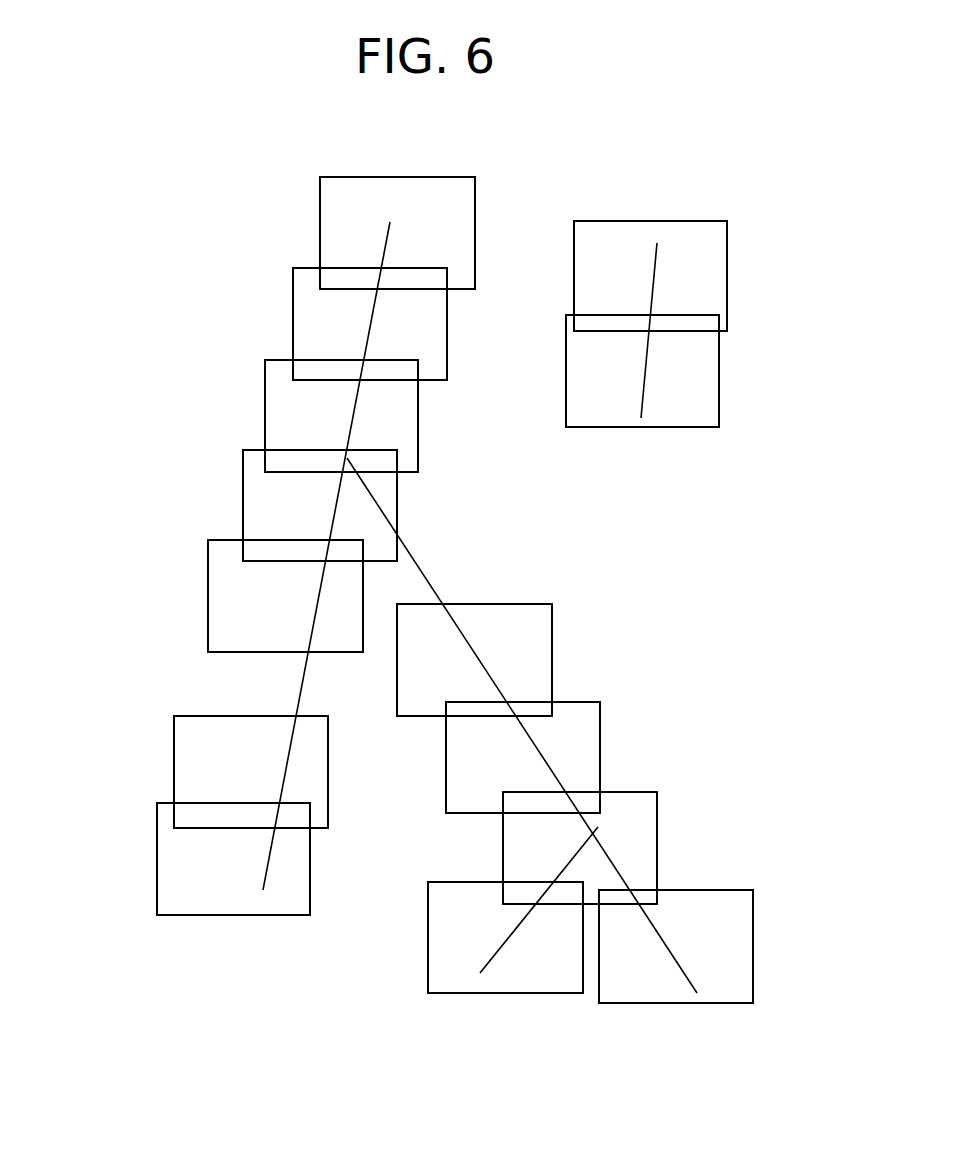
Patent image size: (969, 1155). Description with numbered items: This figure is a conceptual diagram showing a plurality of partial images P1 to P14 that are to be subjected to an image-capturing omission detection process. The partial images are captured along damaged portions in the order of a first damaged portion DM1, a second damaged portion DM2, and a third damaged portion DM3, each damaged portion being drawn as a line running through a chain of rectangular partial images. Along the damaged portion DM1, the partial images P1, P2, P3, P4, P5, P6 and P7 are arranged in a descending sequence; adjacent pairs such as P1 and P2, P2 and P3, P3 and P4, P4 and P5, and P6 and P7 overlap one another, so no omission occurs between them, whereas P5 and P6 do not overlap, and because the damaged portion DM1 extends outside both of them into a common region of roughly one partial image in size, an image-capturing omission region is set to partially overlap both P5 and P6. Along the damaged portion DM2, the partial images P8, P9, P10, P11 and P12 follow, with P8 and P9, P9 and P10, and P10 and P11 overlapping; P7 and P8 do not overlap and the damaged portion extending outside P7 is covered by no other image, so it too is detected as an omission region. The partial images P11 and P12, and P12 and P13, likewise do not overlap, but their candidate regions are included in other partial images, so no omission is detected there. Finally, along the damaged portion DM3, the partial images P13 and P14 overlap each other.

The partial image P1 is at (317, 217).
The partial image P2 is at (292, 311).
The partial image P3 is at (264, 398).
The partial image P4 is at (243, 487).
The partial image P5 is at (208, 580).
The partial image P6 is at (174, 754).
The partial image P7 is at (157, 847).
The partial image P8 is at (552, 631).
The partial image P9 is at (600, 740).
The partial image P10 is at (657, 828).
The partial image P11 is at (510, 993).
The partial image P12 is at (678, 1003).
The partial image P13 is at (727, 252).
The partial image P14 is at (719, 372).
The damaged portion DM1 is at (373, 323).
The damaged portion DM2 is at (423, 567).
The damaged portion DM3 is at (652, 297).